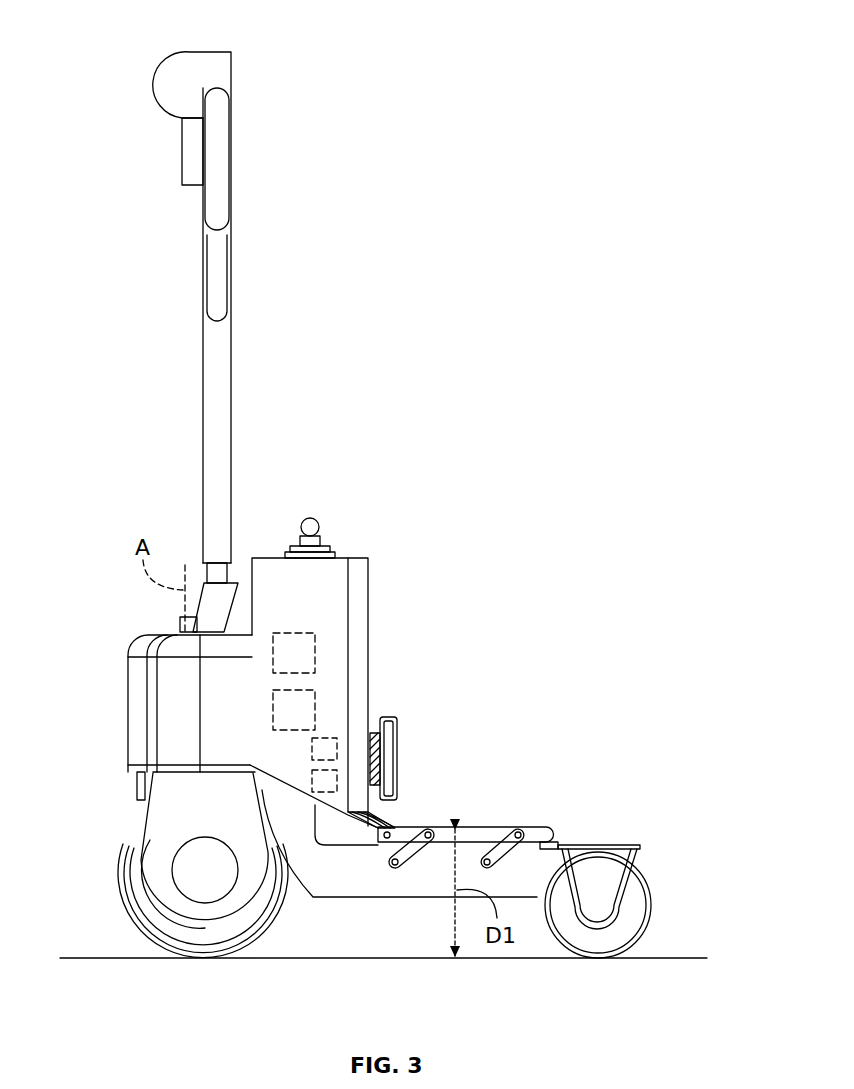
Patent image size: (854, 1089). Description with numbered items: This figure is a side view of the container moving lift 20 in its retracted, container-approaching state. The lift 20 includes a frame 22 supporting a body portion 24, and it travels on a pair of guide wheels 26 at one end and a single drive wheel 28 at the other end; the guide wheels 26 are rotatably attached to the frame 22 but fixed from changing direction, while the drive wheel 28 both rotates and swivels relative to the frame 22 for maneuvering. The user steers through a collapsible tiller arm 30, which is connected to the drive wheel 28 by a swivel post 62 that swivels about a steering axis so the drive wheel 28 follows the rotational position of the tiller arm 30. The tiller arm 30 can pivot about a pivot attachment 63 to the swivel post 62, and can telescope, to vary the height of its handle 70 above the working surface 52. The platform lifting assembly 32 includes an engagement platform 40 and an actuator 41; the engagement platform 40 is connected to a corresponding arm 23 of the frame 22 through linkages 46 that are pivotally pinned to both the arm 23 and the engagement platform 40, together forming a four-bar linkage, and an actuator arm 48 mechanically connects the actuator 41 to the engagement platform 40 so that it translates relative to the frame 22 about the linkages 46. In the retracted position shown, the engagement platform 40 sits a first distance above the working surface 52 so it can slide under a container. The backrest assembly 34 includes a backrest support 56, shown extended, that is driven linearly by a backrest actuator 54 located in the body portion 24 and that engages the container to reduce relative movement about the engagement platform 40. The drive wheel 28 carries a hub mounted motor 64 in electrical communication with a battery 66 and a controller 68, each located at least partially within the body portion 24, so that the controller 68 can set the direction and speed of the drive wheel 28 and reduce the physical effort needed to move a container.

The lift 20 is at (387, 432).
The frame 22 is at (363, 899).
The arm 23 is at (307, 885).
The body portion 24 is at (340, 585).
The guide wheels 26 is at (640, 948).
The drive wheel 28 is at (120, 928).
The tiller arm 30 is at (203, 378).
The platform lifting assembly 32 is at (513, 815).
The backrest assembly 34 is at (400, 732).
The engagement platform 40 is at (457, 827).
The actuator 41 is at (313, 780).
The linkages 46 is at (418, 867).
The actuator arm 48 is at (390, 812).
The working surface 52 is at (540, 958).
The backrest actuator 54 is at (313, 748).
The backrest support 56 is at (397, 767).
The swivel post 62 is at (180, 627).
The pivot attachment 63 is at (234, 583).
The motor 64 is at (190, 868).
The battery 66 is at (315, 655).
The controller 68 is at (315, 710).
The handle 70 is at (222, 90).